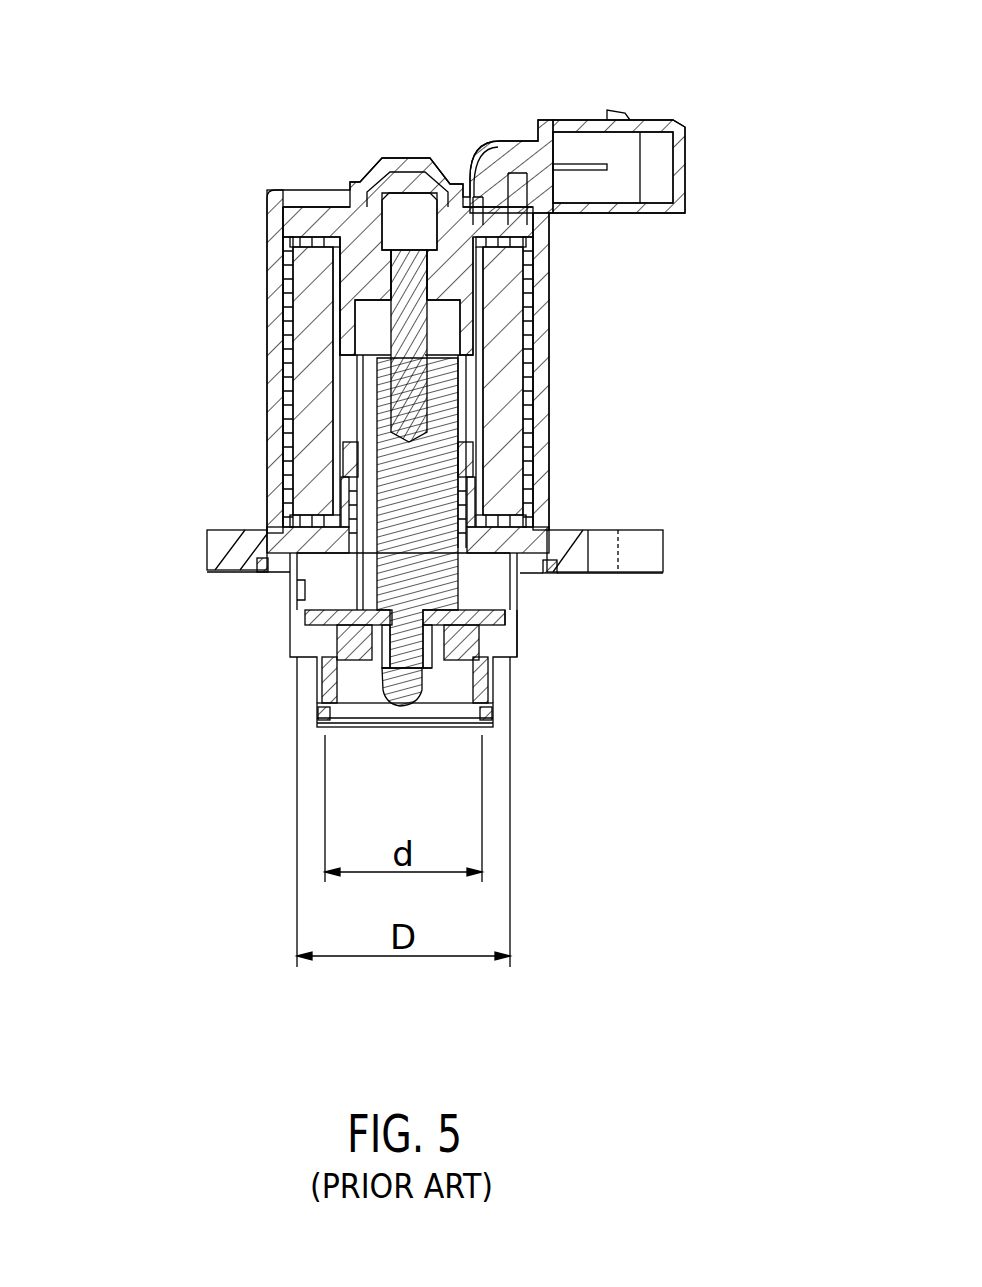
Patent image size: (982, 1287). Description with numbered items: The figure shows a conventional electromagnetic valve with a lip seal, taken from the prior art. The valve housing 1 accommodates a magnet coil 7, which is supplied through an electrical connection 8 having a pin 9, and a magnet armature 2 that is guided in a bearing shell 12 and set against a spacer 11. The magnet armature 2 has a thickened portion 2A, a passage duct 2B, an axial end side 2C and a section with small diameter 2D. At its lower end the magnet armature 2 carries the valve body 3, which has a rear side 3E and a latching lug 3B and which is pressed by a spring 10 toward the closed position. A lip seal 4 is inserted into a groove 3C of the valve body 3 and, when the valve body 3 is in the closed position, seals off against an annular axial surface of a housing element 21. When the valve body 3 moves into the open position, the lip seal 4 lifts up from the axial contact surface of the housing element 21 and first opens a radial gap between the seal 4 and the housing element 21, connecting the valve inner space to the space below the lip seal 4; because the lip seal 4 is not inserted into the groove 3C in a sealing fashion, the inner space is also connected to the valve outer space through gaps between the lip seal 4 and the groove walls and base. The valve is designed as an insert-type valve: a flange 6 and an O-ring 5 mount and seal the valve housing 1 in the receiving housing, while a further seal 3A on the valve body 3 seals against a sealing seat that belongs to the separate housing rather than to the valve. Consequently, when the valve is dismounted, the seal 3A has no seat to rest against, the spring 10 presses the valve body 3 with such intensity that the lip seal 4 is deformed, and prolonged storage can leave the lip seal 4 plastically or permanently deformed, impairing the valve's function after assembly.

The valve housing 1 is at (385, 331).
The magnet armature 2 is at (272, 490).
The thickened portion 2A is at (525, 812).
The passage duct 2B is at (280, 482).
The axial end side 2C is at (577, 298).
The section with small diameter 2D is at (303, 793).
The valve body 3 is at (304, 670).
The seal 3A is at (290, 762).
The latching lug 3B is at (558, 816).
The groove 3C is at (298, 654).
The rear side 3E is at (206, 580).
The seal 4 is at (596, 751).
The O-ring 5 is at (533, 598).
The flange 6 is at (507, 530).
The magnet coil 7 is at (552, 381).
The electrical connection 8 is at (684, 85).
The pin 9 is at (627, 216).
The spring 10 is at (634, 655).
The spacer 11 is at (596, 305).
The bearing shell 12 is at (542, 382).
The housing element 21 is at (654, 700).